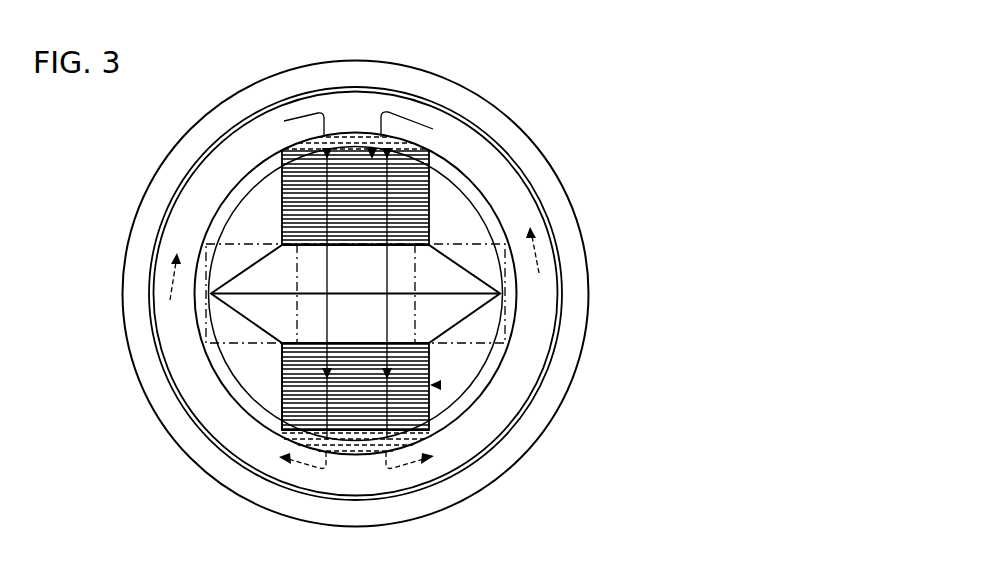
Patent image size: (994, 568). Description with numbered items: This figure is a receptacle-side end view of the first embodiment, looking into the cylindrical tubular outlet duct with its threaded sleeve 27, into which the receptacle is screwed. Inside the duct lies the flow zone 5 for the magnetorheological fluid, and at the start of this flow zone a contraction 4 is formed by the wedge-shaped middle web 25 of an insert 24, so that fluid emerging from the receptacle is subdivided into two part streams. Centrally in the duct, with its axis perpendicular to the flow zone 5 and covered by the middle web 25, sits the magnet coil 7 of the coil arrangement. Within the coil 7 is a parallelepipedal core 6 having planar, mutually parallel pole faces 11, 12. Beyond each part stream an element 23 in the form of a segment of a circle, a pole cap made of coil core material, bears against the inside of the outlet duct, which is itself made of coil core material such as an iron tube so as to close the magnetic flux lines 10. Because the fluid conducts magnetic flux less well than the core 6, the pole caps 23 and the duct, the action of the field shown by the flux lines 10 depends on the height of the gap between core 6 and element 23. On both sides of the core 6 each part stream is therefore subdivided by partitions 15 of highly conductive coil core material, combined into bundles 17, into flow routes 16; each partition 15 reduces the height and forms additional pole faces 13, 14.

The contraction 4 is at (387, 287).
The flow zone 5 is at (450, 122).
The core 6 is at (295, 325).
The magnet coil 7 is at (207, 260).
The magnetic flux lines 10 is at (323, 258).
The pole face 11 is at (340, 343).
The pole face 12 is at (430, 222).
The additional pole face 13 is at (282, 363).
The additional pole face 14 is at (430, 354).
The partition 15 is at (298, 425).
The flow route 16 is at (282, 407).
The bundle 17 is at (372, 150).
The pole cap 23 is at (361, 140).
The insert 24 is at (431, 211).
The wedge-shaped middle web 25 is at (470, 283).
The threaded sleeve 27 is at (400, 80).